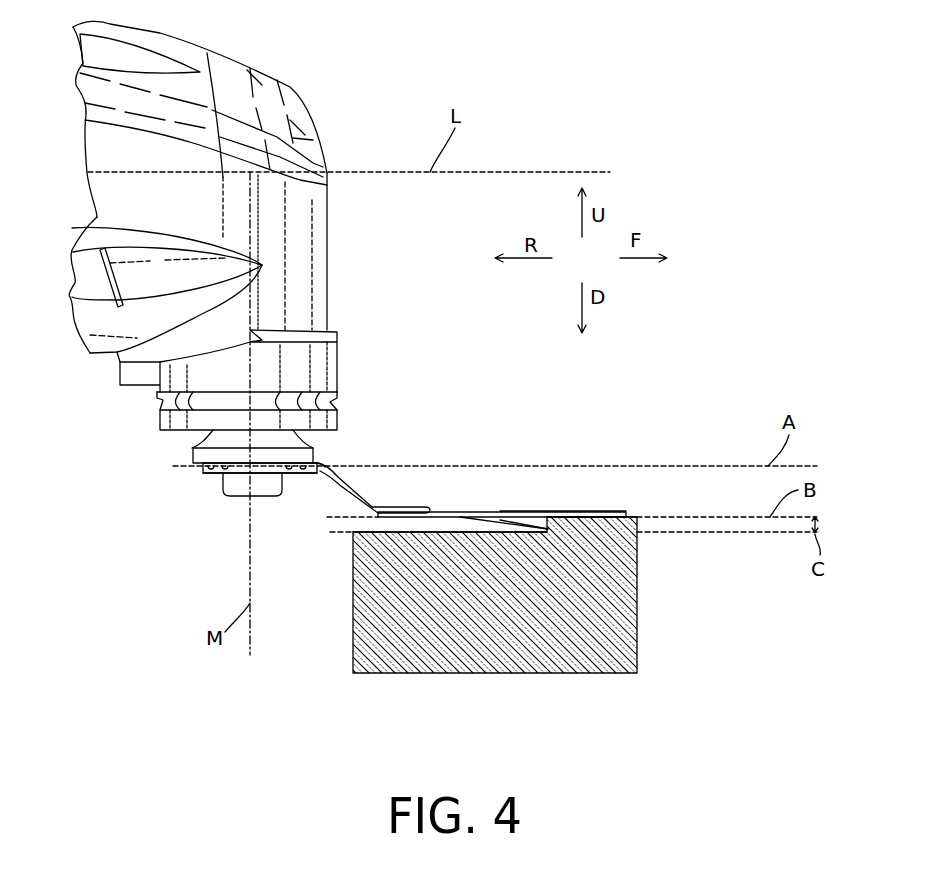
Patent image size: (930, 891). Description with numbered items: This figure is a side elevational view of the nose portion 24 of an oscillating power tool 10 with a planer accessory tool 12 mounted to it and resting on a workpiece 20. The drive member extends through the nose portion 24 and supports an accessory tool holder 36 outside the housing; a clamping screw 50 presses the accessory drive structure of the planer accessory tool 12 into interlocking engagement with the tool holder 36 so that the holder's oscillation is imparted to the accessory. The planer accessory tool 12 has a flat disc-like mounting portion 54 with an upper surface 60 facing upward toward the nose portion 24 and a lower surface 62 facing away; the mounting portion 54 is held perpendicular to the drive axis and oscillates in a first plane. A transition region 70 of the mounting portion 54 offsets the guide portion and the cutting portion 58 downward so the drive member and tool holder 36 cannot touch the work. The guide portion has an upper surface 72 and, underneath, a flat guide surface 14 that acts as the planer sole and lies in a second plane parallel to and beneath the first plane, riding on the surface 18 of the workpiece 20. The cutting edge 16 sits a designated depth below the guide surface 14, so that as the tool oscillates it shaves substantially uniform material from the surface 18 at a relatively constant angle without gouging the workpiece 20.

The oscillating power tool 10 is at (329, 93).
The planer accessory tool 12 is at (484, 403).
The flat guide surface 14 is at (430, 514).
The cutting edge 16 is at (545, 528).
The surface of the workpiece 18 is at (637, 517).
The workpiece 20 is at (626, 587).
The nose portion 24 is at (338, 215).
The accessory tool holder 36 is at (192, 455).
The clamping screw 50 is at (238, 482).
The mounting portion 54 is at (215, 477).
The cutting portion 58 is at (515, 517).
The upper surface 60 is at (318, 464).
The lower surface 62 is at (285, 475).
The transition region 70 is at (343, 487).
The upper surface 72 is at (590, 510).